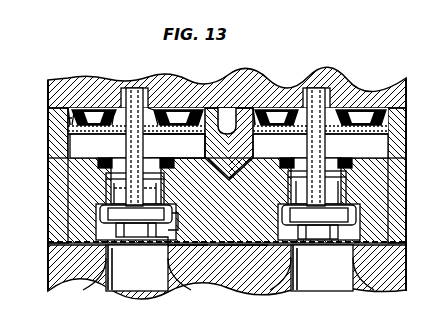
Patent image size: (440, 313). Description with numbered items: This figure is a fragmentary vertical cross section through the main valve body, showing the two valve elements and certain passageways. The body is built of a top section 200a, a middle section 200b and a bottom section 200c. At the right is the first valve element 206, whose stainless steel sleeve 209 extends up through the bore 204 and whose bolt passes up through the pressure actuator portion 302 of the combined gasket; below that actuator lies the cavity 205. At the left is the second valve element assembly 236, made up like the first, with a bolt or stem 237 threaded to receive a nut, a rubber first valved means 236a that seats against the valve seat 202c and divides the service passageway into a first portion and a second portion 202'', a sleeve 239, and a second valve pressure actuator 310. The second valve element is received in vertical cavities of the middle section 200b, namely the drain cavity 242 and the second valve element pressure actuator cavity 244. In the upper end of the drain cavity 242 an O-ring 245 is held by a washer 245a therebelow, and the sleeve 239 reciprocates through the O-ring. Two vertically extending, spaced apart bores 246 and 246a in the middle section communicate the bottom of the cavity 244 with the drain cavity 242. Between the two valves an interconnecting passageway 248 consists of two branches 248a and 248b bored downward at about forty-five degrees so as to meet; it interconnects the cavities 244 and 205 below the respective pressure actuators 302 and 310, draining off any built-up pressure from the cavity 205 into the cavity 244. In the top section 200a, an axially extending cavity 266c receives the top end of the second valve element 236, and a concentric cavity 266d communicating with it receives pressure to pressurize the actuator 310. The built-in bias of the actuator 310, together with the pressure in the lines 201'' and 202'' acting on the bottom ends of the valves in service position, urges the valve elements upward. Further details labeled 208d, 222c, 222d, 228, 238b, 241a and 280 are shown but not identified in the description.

The top section 200a is at (397, 72).
The middle section 200b is at (388, 182).
The bottom section 200c is at (388, 266).
The line 201'' is at (322, 275).
The second portion of service passageway 202'' is at (137, 275).
The valve seat 202c is at (188, 254).
The bore 204 is at (348, 166).
The cavity 205 is at (372, 143).
The first valve element 206 is at (331, 82).
The seal 208d is at (92, 198).
The sleeve 209 is at (312, 142).
The spring 222c is at (300, 82).
The seal member 222d is at (257, 72).
The passage 228 is at (243, 261).
The second valve element assembly 236 is at (137, 82).
The first valved means 236a is at (150, 232).
The bolt or stem 237 is at (144, 104).
The valve head 238b is at (136, 221).
The sleeve 239 is at (150, 188).
The seal ring 241a is at (178, 216).
The drain cavity 242 is at (100, 192).
The second valve element pressure actuator cavity 244 is at (60, 135).
The O-ring 245 is at (158, 168).
The washer 245a is at (158, 178).
The bore 246 is at (137, 146).
The bore 246a is at (176, 146).
The interconnecting passageway 248 is at (229, 144).
The branch 248a is at (221, 154).
The branch 248b is at (238, 170).
The axially extending cavity 266c is at (114, 80).
The concentric cavity 266d is at (62, 72).
The slot 280 is at (222, 100).
The pressure actuator portion 302 is at (398, 118).
The second valve pressure actuator 310 is at (162, 105).